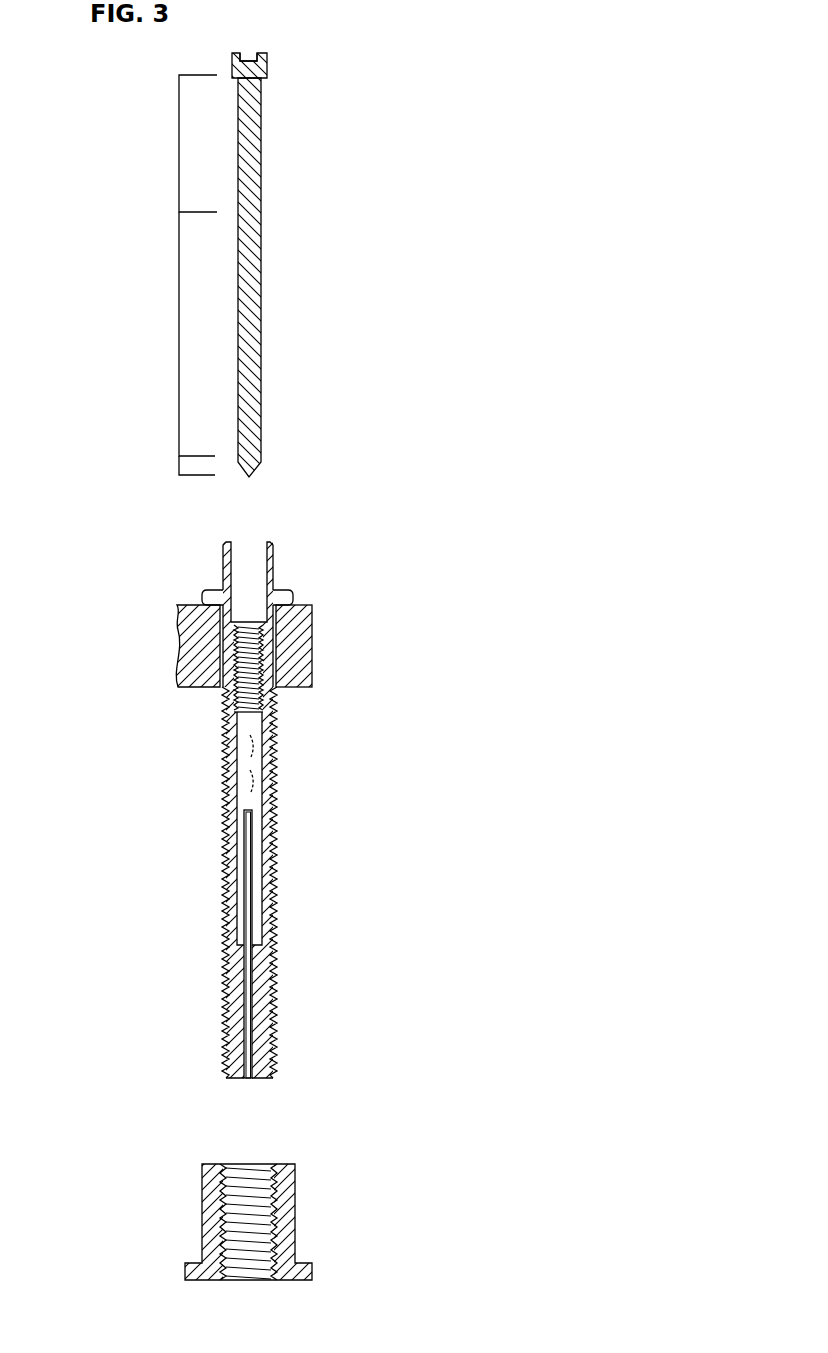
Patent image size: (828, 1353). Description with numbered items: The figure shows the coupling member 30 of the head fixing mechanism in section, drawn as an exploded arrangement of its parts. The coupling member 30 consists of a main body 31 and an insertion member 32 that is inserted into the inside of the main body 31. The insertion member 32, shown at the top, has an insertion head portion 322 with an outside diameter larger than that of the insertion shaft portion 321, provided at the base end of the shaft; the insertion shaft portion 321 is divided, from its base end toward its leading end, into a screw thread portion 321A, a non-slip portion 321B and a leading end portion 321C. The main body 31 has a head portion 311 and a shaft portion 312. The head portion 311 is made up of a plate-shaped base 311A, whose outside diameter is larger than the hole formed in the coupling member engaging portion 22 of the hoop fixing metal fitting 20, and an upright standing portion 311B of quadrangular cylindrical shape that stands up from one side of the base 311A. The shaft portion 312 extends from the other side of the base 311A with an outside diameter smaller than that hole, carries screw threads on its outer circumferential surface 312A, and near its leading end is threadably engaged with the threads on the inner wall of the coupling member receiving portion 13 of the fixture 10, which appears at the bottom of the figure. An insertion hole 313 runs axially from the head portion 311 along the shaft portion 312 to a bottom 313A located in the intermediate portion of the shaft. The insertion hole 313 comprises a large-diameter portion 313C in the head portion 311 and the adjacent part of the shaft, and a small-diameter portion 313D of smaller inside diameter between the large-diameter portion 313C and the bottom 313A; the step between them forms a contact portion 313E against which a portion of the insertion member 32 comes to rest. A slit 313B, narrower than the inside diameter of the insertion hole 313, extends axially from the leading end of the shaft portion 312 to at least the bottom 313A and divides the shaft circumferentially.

The coupling member 30 is at (505, 206).
The insertion member 32 is at (241, 267).
The insertion head portion 322 is at (268, 72).
The insertion shaft portion 321 is at (262, 272).
The screw thread portion 321A is at (164, 143).
The non-slip portion 321B is at (163, 334).
The leading end portion 321C is at (163, 469).
The main body 31 is at (245, 796).
The head portion 311 is at (236, 585).
The base 311A is at (203, 596).
The upright standing portion 311B is at (223, 562).
The shaft portion 312 is at (322, 939).
The outer circumferential surface 312A is at (275, 860).
The insertion hole 313 is at (312, 796).
The bottom 313A is at (277, 922).
The slit 313B is at (277, 996).
The large-diameter portion 313C is at (250, 563).
The small-diameter portion 313D is at (262, 760).
The contact portion 313E is at (250, 618).
The hoop fixing metal fitting 20 is at (180, 652).
The coupling member engaging portion 22 is at (312, 661).
The fixture 10 is at (247, 1222).
The coupling member receiving portion 13 is at (294, 1210).